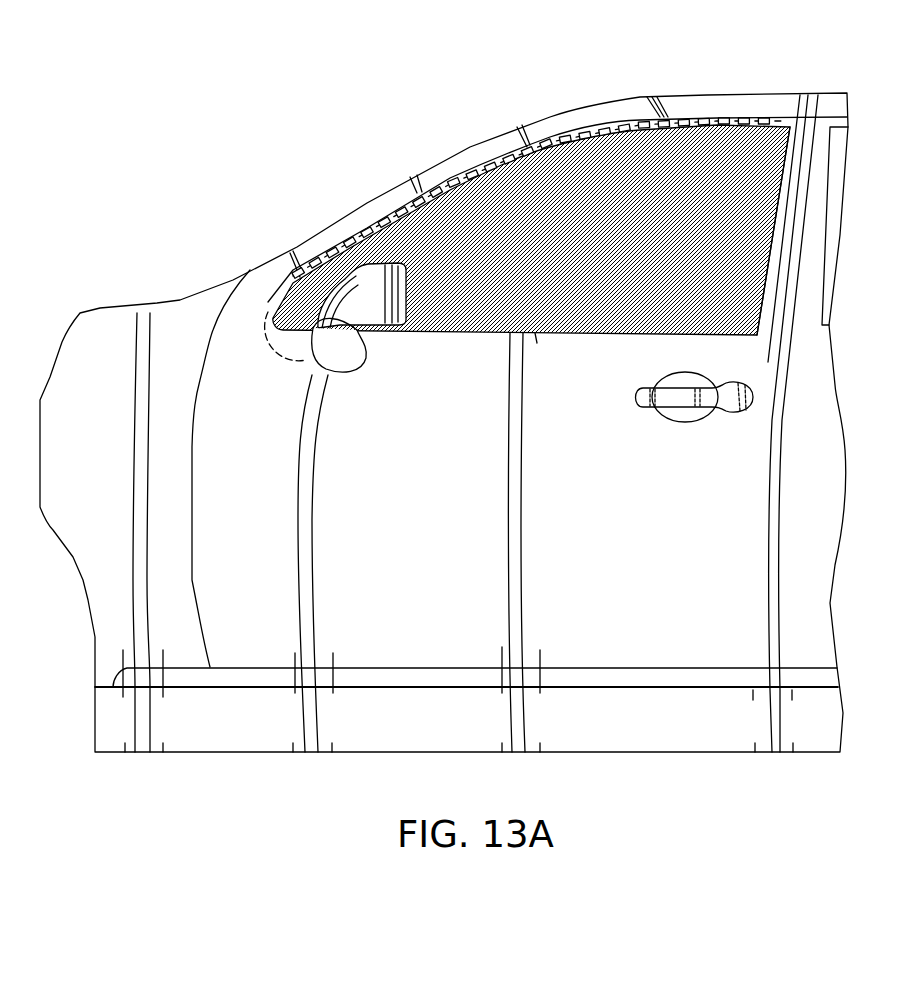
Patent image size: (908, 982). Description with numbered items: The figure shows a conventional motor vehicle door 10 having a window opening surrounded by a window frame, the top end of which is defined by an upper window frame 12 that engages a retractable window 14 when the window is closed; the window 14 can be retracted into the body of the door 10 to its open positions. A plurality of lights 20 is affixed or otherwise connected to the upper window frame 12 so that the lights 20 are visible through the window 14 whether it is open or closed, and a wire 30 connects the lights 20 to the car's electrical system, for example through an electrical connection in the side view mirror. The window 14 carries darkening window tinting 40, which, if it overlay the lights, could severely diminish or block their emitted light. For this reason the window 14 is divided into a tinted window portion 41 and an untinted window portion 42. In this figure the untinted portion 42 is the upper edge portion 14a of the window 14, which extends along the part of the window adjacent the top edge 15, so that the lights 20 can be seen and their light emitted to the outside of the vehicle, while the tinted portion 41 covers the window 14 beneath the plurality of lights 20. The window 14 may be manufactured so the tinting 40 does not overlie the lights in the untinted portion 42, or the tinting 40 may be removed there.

The motor vehicle door 10 is at (458, 509).
The upper window frame 12 is at (800, 123).
The retractable window 14 is at (586, 277).
The upper edge portion 14a is at (782, 120).
The top edge 15 is at (677, 113).
The lights 20 is at (557, 113).
The wire 30 is at (273, 340).
The darkening window tinting 40 is at (747, 285).
The tinted window portion 41 is at (765, 176).
The untinted window portion 42 is at (361, 226).